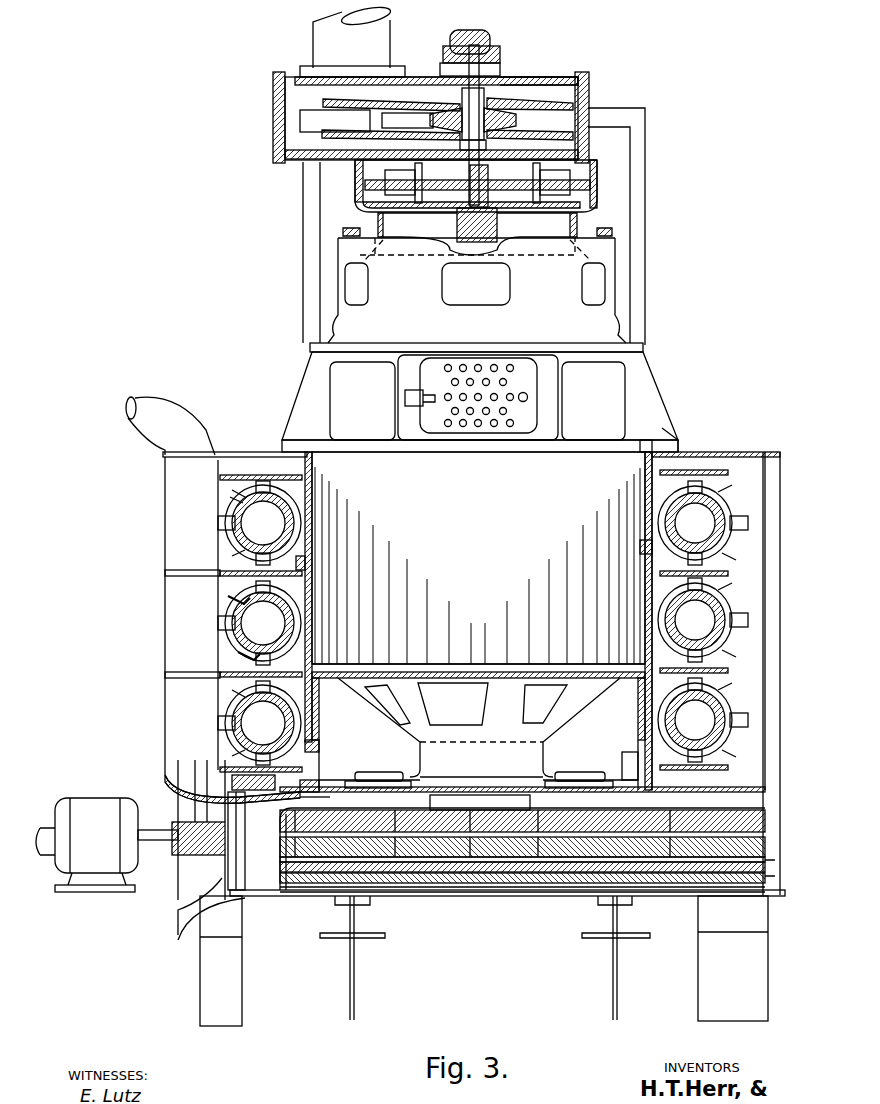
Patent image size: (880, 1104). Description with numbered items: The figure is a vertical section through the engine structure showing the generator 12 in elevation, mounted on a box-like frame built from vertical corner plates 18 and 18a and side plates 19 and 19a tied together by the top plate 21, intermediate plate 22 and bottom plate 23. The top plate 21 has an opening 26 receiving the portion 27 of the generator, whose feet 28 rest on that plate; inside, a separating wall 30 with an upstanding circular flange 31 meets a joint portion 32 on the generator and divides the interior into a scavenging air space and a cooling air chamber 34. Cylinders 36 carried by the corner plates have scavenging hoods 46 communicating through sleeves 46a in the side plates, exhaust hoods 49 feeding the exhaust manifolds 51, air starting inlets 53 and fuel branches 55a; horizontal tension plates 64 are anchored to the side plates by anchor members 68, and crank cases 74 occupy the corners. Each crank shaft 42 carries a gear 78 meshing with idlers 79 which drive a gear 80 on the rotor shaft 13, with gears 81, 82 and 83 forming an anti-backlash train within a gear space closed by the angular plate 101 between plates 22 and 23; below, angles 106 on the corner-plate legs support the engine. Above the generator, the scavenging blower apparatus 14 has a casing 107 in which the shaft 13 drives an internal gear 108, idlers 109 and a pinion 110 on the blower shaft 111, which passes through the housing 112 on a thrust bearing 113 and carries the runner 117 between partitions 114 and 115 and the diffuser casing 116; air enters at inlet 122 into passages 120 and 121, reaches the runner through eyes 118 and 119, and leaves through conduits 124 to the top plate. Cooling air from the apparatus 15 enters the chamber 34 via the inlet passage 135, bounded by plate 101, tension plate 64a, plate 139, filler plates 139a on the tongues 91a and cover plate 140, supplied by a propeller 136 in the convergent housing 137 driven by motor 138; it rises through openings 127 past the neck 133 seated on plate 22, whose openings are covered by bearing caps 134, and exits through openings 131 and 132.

The generator 12 is at (610, 368).
The rotor shaft 13 is at (457, 242).
The scavenging blower apparatus 14 is at (615, 94).
The generator cooling blower apparatus 15 is at (124, 912).
The cylinder supporting corner plate 18 is at (722, 460).
The cylinder supporting corner plate 18a is at (228, 455).
The side plate 19 is at (647, 496).
The side plate 19a is at (312, 600).
The top horizontal plate 21 is at (692, 453).
The intermediate plate 22 is at (628, 790).
The bottom plate 23 is at (306, 900).
The opening 26 is at (645, 456).
The generator portion 27 is at (490, 539).
The feet 28 is at (665, 440).
The separating wall 30 is at (318, 746).
The upstanding circular flange 31 is at (320, 702).
The joint portion 32 is at (326, 678).
The generator cooling air chamber 34 is at (478, 762).
The cylinder 36 is at (236, 622).
The crank shaft 42 is at (720, 792).
The hood or housing member 46 is at (728, 505).
The ring or sleeve 46a is at (645, 548).
The exhaust hood 49 is at (292, 510).
The exhaust manifold 51 is at (172, 648).
The air starting inlet 53 is at (224, 723).
The fuel branch 55a is at (228, 598).
The horizontal tension plate 64 is at (722, 680).
The tension plate 64a is at (253, 791).
The anchor member 68 is at (305, 562).
The crank case 74 is at (776, 466).
The crank shaft gear 78 is at (765, 822).
The idler gear 79 is at (627, 840).
The rotor shaft gear 80 is at (511, 840).
The anti-backlash gear 81 is at (765, 863).
The anti-backlash gear 82 is at (582, 883).
The anti-backlash gear 83 is at (478, 872).
The tongue 91a is at (303, 798).
The angular plate member 101 is at (279, 836).
The angle 106 is at (350, 935).
The casing 107 is at (597, 190).
The internal gear 108 is at (355, 190).
The idler 109 is at (410, 180).
The central pinion 110 is at (488, 180).
The blower rotor shaft 111 is at (480, 100).
The blower housing 112 is at (565, 78).
The thrust bearing 113 is at (490, 46).
The partition member 114 is at (520, 103).
The partition member 115 is at (500, 136).
The casing construction 116 is at (366, 121).
The runner 117 is at (500, 113).
The entrance eye 118 is at (462, 98).
The entrance eye 119 is at (460, 143).
The upper passage 120 is at (391, 97).
The lower passage 121 is at (391, 143).
The inlet 122 is at (380, 40).
The conduit 124 is at (645, 197).
The opening 127 is at (560, 700).
The opening 131 is at (507, 383).
The opening 132 is at (500, 290).
The hub or neck portion 133 is at (522, 758).
The bearing cap 134 is at (380, 772).
The inlet passage 135 is at (249, 841).
The propeller 136 is at (192, 868).
The convergent housing 137 is at (185, 895).
The motor 138 is at (85, 810).
The plate 139 is at (255, 780).
The lateral filler plate 139a is at (310, 790).
The cover plate 140 is at (200, 935).